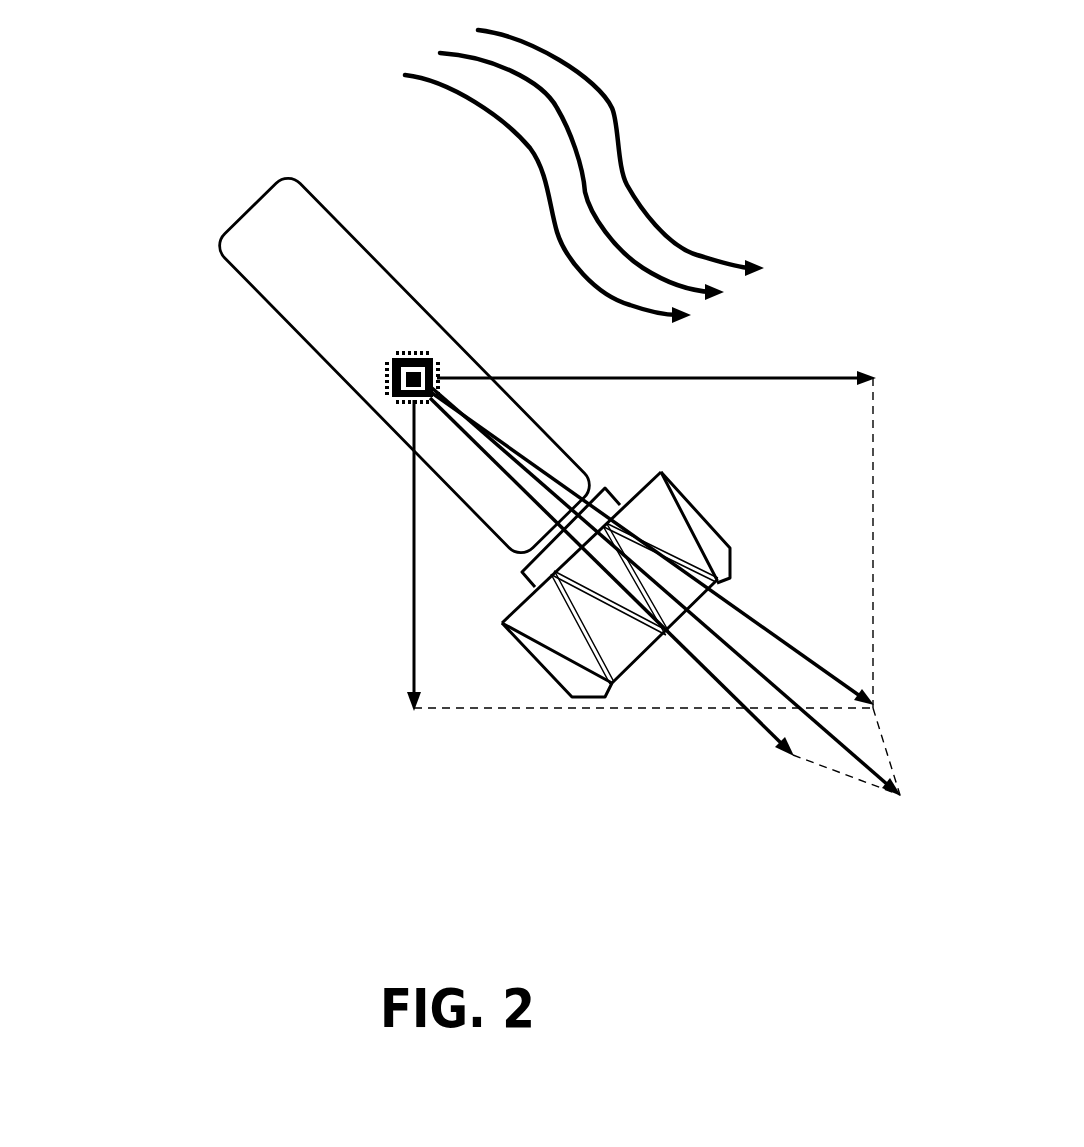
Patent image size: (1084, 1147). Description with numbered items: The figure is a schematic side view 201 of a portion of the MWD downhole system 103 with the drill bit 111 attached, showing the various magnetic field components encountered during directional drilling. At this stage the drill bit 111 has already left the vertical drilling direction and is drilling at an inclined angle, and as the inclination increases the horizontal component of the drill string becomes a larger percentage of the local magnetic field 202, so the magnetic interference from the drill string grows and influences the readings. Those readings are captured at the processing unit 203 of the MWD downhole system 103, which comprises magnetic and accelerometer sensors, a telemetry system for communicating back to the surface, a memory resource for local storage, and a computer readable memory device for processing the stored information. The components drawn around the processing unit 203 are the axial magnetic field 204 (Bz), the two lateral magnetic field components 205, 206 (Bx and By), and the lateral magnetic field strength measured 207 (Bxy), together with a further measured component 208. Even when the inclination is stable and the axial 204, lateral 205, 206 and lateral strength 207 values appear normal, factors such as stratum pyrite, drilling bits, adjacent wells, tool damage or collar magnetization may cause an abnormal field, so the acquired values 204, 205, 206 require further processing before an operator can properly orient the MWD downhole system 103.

The side view of MWD downhole system attached to drill bit 201 is at (165, 40).
The local magnetic field 202 is at (613, 70).
The MWD downhole system 103 is at (258, 212).
The processing unit 203 is at (392, 381).
The lateral magnetic field component 206 is at (828, 372).
The lateral magnetic field component 205 is at (418, 680).
The drill bit 111 is at (703, 535).
The lateral magnetic field strength measured 207 is at (847, 682).
The second beam 208 is at (870, 775).
The axial magnetic field component 204 is at (753, 725).